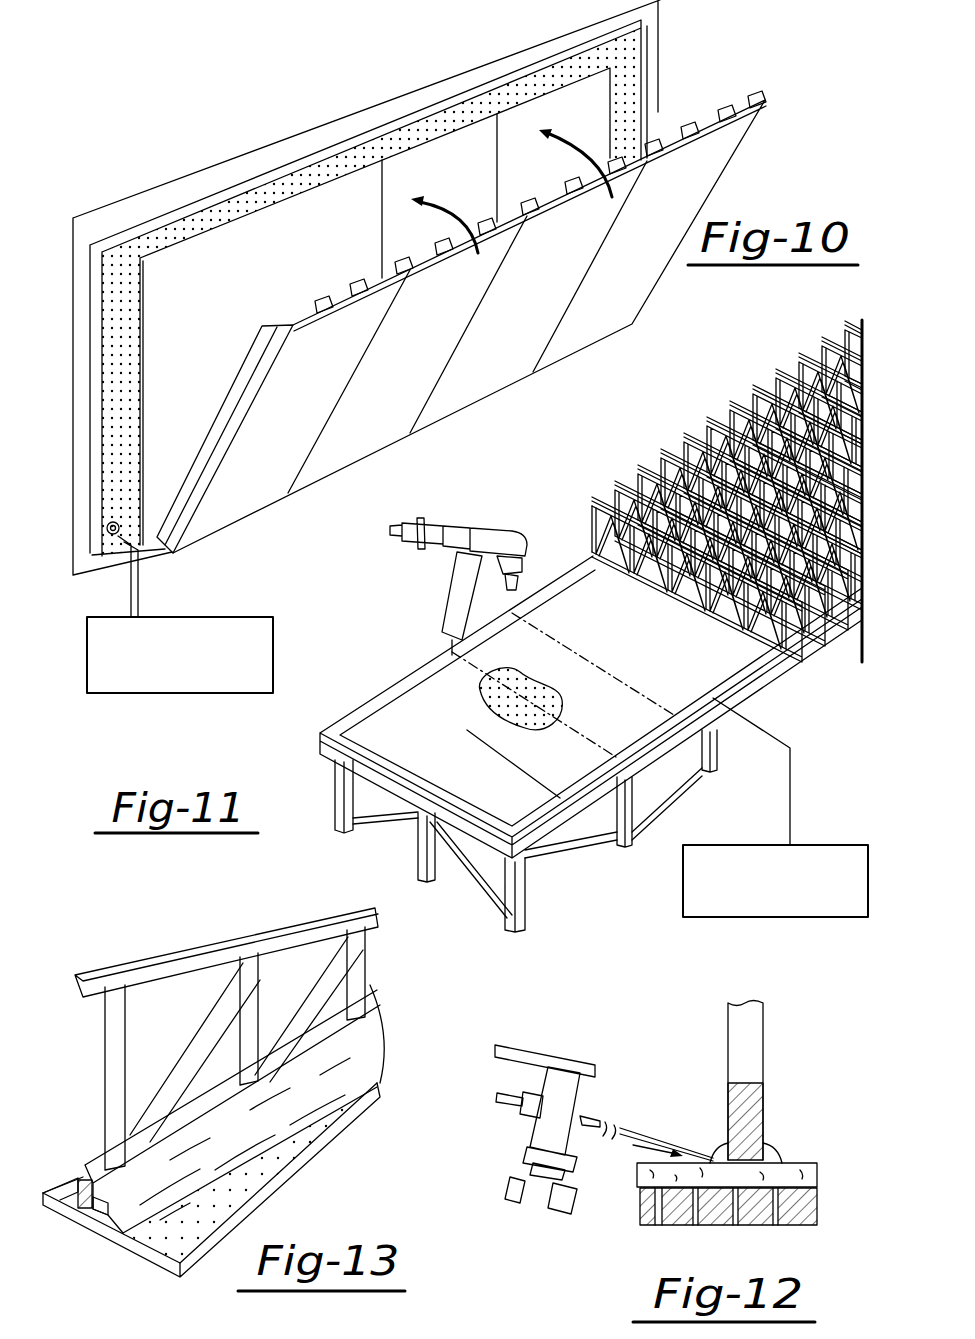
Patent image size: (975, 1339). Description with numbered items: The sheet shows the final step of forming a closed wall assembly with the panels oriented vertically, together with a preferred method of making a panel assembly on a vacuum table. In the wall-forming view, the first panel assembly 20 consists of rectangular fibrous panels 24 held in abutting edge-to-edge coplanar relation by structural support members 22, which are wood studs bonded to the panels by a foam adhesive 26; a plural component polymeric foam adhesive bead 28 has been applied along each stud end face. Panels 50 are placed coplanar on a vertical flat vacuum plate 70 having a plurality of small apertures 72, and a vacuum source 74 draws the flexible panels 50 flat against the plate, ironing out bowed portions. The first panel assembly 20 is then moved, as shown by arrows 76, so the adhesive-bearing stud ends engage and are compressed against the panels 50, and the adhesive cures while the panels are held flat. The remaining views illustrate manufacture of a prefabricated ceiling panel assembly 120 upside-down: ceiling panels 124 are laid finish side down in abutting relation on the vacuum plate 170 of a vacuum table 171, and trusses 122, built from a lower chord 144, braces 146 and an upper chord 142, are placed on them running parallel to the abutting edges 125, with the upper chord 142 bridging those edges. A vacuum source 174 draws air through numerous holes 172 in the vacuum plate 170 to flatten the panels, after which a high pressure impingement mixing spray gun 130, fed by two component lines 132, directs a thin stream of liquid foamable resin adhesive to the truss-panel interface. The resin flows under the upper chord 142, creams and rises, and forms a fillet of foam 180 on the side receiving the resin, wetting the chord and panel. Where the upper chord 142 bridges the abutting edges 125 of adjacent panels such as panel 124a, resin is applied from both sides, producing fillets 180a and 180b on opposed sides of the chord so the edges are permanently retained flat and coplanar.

In FIG. 10, the first panel assembly 20 is at (504, 322).
In FIG. 10, the structural support members 22 is at (260, 367).
In FIG. 10, the rectangular fibrous panels 24 is at (322, 382).
In FIG. 10, the foam adhesive 26 is at (280, 310).
In FIG. 10, the polymeric foam adhesive bead 28 is at (347, 300).
In FIG. 10, the panels 50 is at (282, 222).
In FIG. 10, the vacuum plate 70 is at (150, 233).
In FIG. 10, the small apertures 72 is at (450, 113).
In FIG. 10, the vacuum source 74 is at (200, 617).
In FIG. 10, the arrows 76 is at (477, 235).
In FIG. 11, the prefabricated ceiling panel assembly 120 is at (729, 385).
In FIG. 11, the trusses 122 is at (709, 521).
In FIG. 13, the trusses 122 is at (96, 945).
In FIG. 12, the trusses 122 is at (801, 1050).
In FIG. 11, the ceiling panels 124 is at (393, 720).
In FIG. 13, the ceiling panels 124 is at (180, 1178).
In FIG. 12, the ceiling panels 124 is at (797, 1160).
In FIG. 13, the panel 124a is at (70, 1175).
In FIG. 11, the abutting edges 125 is at (600, 742).
In FIG. 13, the abutting edges 125 is at (100, 1216).
In FIG. 11, the high pressure impingement mixing spray gun 130 is at (427, 564).
In FIG. 12, the high pressure impingement mixing spray gun 130 is at (600, 1040).
In FIG. 12, the lines 132 is at (560, 1208).
In FIG. 11, the upper chord 142 is at (665, 600).
In FIG. 13, the upper chord 142 is at (380, 1008).
In FIG. 12, the upper chord 142 is at (763, 1103).
In FIG. 11, the lower chord 144 is at (667, 595).
In FIG. 13, the lower chord 144 is at (203, 950).
In FIG. 11, the braces 146 is at (605, 560).
In FIG. 13, the braces 146 is at (145, 1075).
In FIG. 11, the vacuum plate 170 is at (496, 710).
In FIG. 13, the vacuum plate 170 is at (167, 1272).
In FIG. 12, the vacuum plate 170 is at (722, 1187).
In FIG. 11, the vacuum table 171 is at (320, 740).
In FIG. 12, the holes 172 is at (787, 1213).
In FIG. 11, the vacuum source 174 is at (683, 890).
In FIG. 12, the fillet of foam 180 is at (755, 1085).
In FIG. 13, the fillet 180a is at (75, 1205).
In FIG. 13, the fillet 180b is at (108, 1212).